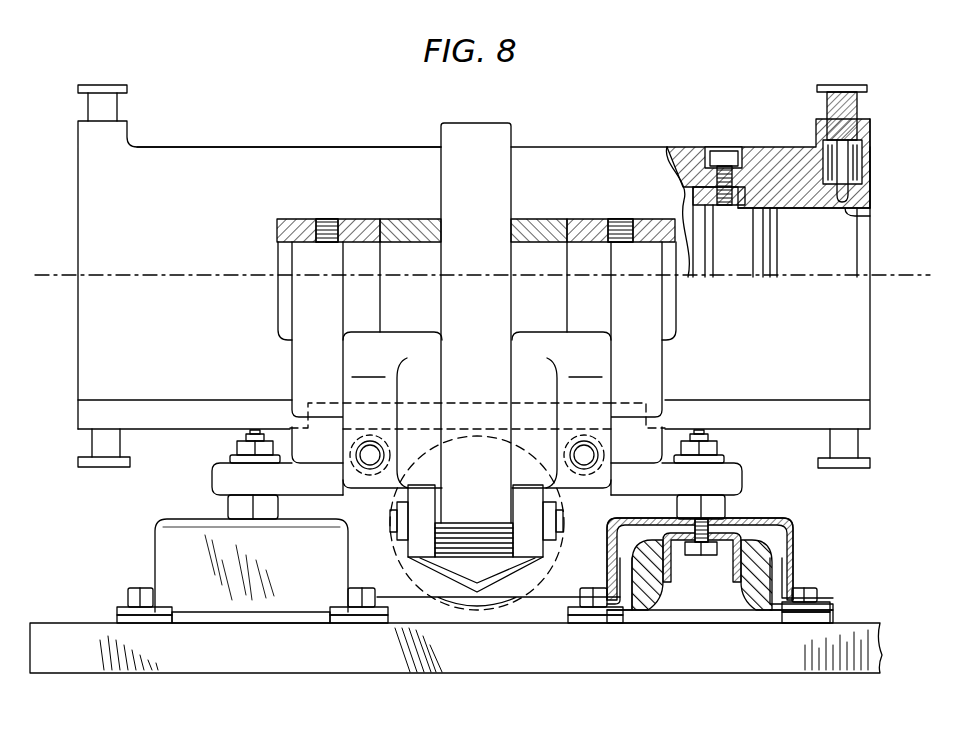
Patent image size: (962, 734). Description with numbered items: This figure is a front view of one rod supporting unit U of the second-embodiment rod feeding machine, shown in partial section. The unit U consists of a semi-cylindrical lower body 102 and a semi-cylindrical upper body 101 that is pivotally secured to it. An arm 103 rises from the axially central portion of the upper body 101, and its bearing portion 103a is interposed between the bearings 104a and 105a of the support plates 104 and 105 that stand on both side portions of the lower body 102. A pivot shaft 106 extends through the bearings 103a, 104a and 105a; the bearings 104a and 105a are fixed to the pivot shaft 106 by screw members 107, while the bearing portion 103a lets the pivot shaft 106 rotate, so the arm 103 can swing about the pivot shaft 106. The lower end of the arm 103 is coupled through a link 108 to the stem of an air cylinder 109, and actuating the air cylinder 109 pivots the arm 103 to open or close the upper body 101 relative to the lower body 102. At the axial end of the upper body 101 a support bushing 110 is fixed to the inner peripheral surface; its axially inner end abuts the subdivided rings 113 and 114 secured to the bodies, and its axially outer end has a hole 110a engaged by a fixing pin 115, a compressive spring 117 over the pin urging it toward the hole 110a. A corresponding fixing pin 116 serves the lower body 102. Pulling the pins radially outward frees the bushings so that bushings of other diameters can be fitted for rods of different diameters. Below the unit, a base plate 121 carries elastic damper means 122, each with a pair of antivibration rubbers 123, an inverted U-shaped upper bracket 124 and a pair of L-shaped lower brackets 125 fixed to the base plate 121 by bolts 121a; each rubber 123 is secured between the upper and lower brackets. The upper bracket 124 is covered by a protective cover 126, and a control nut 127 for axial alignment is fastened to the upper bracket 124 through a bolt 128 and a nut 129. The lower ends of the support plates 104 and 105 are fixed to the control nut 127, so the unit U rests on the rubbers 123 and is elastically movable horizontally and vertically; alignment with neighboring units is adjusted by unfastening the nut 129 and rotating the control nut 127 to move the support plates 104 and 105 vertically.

The supporting unit U is at (275, 158).
The upper body 101 is at (564, 158).
The lower body 102 is at (853, 350).
The arm 103 is at (457, 307).
The bearing portion 103a is at (532, 229).
The support plate 104 is at (302, 363).
The bearing 104a is at (292, 229).
The support plate 105 is at (650, 370).
The bearing 105a is at (592, 222).
The pivot shaft 106 is at (365, 260).
The screw member 107 is at (327, 229).
The link 108 is at (421, 536).
The air cylinder 109 is at (480, 610).
The support bushing 110 is at (782, 193).
The hole 110a is at (840, 213).
The subdivided ring 113 is at (696, 156).
The subdivided ring 114 is at (703, 183).
The fixing pin 115 is at (842, 130).
The fixing pin 116 is at (847, 442).
The compressive spring 117 is at (870, 170).
The base plate 121 is at (278, 665).
The bolt 121a is at (820, 598).
The elastic damper means 122 is at (186, 518).
The antivibration rubber 123 is at (647, 593).
The upper bracket 124 is at (730, 560).
The lower bracket 125 is at (797, 568).
The protective cover 126 is at (797, 523).
The control nut 127 is at (268, 503).
The bolt 128 is at (700, 557).
The nut 129 is at (233, 445).